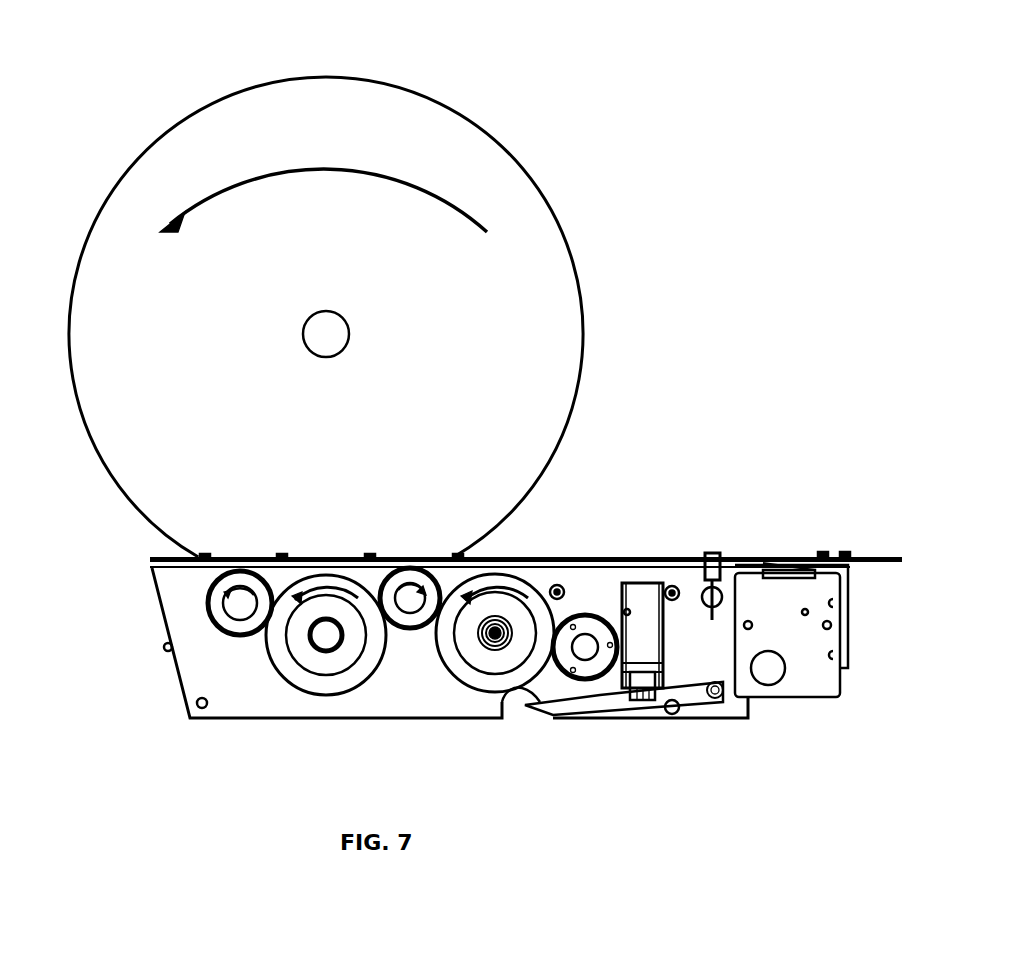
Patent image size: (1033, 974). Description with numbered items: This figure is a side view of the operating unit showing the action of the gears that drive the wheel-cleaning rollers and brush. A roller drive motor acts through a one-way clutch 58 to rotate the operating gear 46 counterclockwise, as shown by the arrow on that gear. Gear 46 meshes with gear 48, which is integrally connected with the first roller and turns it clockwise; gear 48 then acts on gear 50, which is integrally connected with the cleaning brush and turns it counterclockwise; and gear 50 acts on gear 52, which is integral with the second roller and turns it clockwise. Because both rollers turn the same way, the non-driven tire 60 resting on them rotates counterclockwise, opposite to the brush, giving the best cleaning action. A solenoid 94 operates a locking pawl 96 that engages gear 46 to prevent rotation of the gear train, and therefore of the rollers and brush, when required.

The tire 60 is at (128, 163).
The gear 52 is at (228, 623).
The gear 50 is at (293, 675).
The gear 48 is at (407, 622).
The operating gear 46 is at (485, 675).
The one-way clutch 58 is at (603, 615).
The solenoid 94 is at (640, 650).
The locking pawl 96 is at (617, 703).